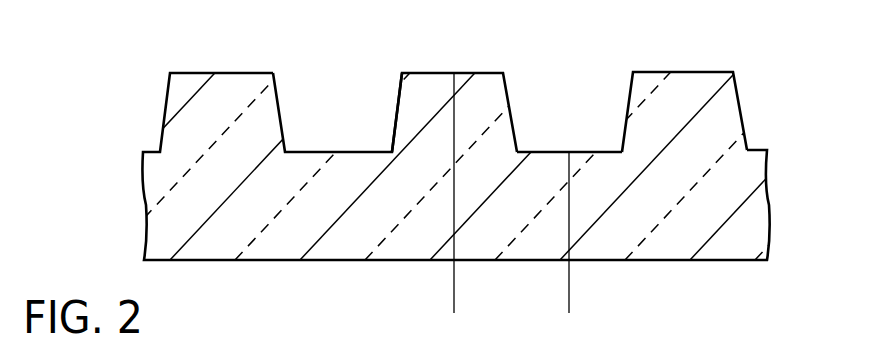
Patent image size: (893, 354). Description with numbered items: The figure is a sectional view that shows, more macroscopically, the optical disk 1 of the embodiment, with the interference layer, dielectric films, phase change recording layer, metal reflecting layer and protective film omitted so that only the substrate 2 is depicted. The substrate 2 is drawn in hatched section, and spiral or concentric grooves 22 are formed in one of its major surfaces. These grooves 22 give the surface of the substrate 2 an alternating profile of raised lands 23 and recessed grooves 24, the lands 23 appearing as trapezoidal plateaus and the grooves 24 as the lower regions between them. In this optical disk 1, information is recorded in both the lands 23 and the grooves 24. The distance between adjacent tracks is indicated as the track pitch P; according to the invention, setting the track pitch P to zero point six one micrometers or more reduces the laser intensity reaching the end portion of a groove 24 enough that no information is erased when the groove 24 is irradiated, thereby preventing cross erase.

The optical disk 1 is at (466, 132).
The substrate 2 is at (753, 215).
The grooves 22 is at (339, 108).
The lands 23 is at (400, 63).
The grooves 24 is at (618, 147).
The track pitch P is at (454, 307).